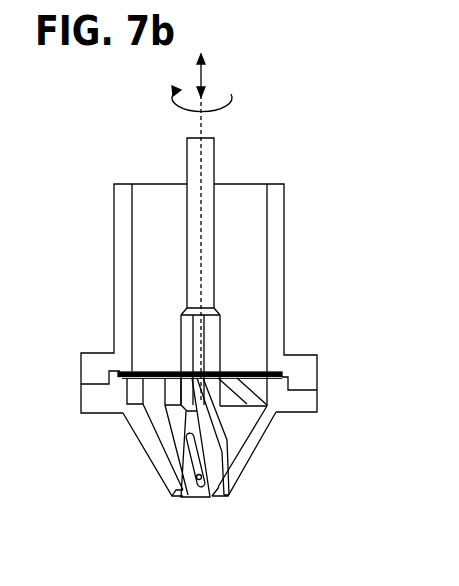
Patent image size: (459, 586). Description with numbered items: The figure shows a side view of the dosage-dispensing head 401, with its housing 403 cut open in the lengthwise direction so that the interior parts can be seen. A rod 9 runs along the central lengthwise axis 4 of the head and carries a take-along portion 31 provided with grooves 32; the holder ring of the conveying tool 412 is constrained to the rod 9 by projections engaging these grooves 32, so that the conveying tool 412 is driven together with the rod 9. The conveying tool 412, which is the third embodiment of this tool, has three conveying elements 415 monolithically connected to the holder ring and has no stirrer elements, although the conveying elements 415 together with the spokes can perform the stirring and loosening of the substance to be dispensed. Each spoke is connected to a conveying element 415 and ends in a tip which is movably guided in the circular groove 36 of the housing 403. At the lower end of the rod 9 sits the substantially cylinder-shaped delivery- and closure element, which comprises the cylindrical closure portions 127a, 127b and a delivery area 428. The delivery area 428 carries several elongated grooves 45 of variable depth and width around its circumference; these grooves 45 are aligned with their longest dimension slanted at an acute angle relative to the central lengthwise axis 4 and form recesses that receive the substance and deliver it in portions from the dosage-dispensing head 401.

The central lengthwise axis 4 is at (200, 163).
The rod 9 is at (188, 233).
The take-along portion 31 is at (215, 347).
The groove 32 is at (200, 327).
The circular groove 36 is at (121, 372).
The dosage-dispensing head 401 is at (300, 180).
The housing 403 is at (108, 422).
The conveying tool 412 is at (240, 432).
The conveying element 415 is at (222, 476).
The closure area 127a is at (198, 497).
The closure area 127b is at (192, 422).
The delivery area 428 is at (200, 478).
The elongated groove 45 is at (182, 487).